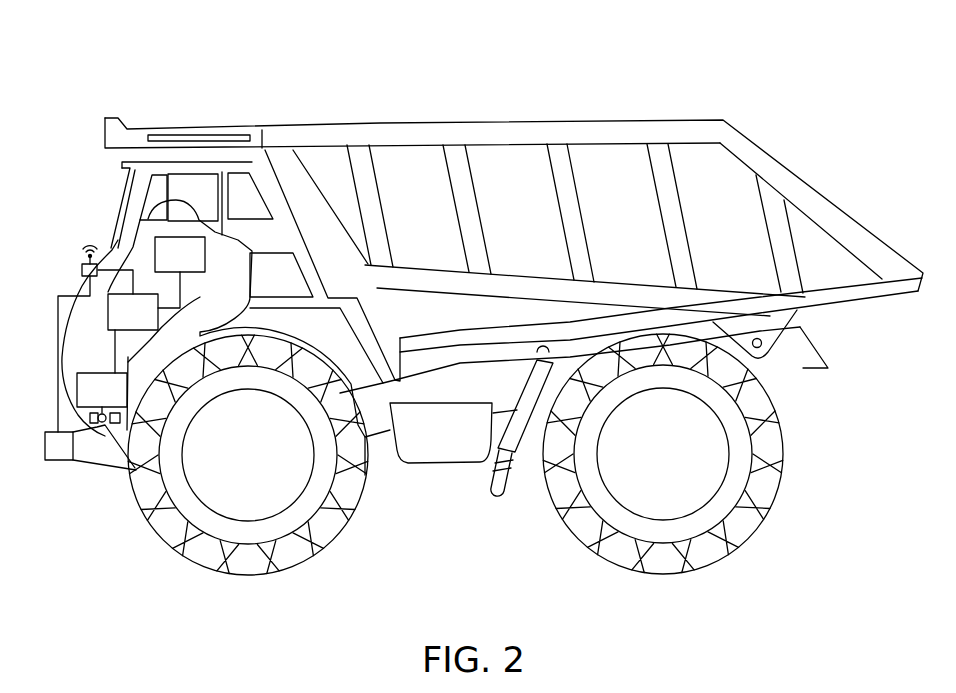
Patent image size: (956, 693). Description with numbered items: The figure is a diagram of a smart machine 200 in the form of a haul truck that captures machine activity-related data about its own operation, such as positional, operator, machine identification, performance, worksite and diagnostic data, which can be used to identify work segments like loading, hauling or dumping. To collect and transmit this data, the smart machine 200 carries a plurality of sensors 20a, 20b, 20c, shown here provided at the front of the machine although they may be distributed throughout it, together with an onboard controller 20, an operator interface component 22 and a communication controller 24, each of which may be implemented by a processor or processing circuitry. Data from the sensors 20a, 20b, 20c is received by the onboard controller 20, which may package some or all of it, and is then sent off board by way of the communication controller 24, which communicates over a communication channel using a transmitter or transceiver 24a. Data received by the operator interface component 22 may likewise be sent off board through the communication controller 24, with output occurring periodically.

The smart machine 200 is at (863, 106).
The onboard controller 20 is at (109, 403).
The sensor 20a is at (62, 432).
The sensor 20b is at (102, 424).
The sensor 20c is at (131, 351).
The operator interface component 22 is at (190, 265).
The communication controller 24 is at (143, 321).
The transceiver 24a is at (82, 268).